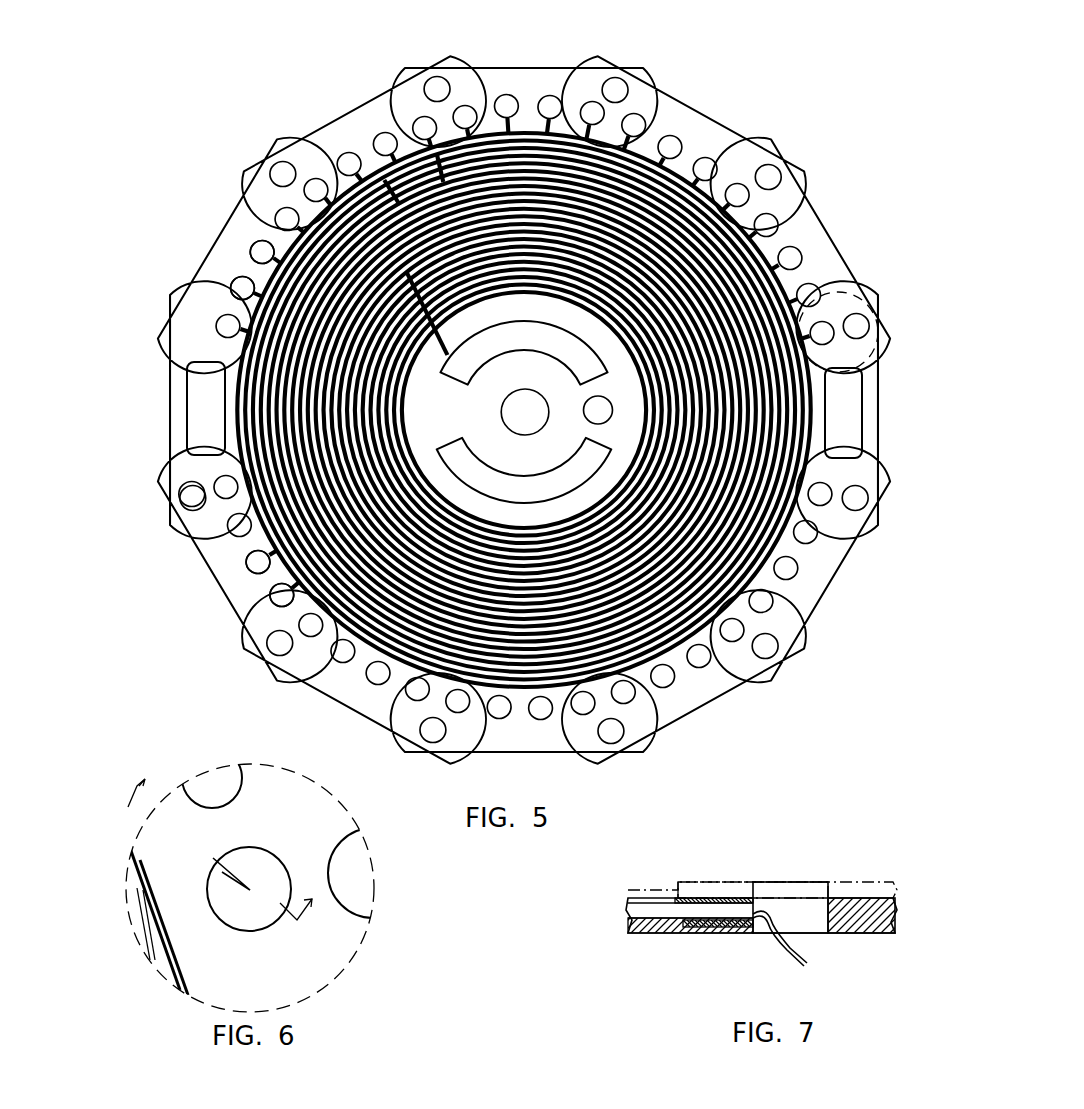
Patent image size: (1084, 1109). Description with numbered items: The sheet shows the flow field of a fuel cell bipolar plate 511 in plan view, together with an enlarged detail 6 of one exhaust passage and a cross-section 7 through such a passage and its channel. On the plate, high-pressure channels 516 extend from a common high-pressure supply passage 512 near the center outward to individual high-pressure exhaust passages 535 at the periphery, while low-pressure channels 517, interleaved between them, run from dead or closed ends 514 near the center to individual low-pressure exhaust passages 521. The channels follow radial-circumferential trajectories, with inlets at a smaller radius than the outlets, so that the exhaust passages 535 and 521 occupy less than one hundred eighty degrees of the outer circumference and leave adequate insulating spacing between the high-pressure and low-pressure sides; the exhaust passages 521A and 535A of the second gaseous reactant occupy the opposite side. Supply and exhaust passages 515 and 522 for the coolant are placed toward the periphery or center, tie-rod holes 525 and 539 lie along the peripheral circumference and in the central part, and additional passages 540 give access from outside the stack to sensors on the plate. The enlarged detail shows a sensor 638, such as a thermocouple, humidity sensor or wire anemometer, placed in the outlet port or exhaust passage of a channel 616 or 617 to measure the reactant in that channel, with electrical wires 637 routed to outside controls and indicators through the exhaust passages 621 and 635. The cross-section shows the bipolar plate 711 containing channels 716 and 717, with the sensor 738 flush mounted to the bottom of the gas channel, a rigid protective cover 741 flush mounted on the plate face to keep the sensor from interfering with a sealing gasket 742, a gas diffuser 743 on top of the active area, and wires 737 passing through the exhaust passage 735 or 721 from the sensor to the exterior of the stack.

In FIG. 5, the bipolar plate 511 is at (702, 113).
In FIG. 5, the common high-pressure supply passage 512 is at (541, 338).
In FIG. 5, the dead or closed ends 514 is at (398, 183).
In FIG. 5, the coolant supply passage 515 is at (843, 415).
In FIG. 5, the high-pressure channels 516 is at (420, 338).
In FIG. 5, the low-pressure channels 517 is at (440, 165).
In FIG. 5, the low-pressure exhaust passages 521 is at (258, 252).
In FIG. 5, the coolant exhaust passage 522 is at (203, 408).
In FIG. 5, the tie-rod holes 525 is at (184, 497).
In FIG. 5, the high-pressure exhaust passages 535 is at (242, 290).
In FIG. 5, the exhaust passages of the second gaseous reactant 535A is at (252, 566).
In FIG. 5, the exhaust passages of the second gaseous reactant 521A is at (278, 596).
In FIG. 5, the tie-rod hole 539 is at (525, 412).
In FIG. 5, the additional passages 540 is at (598, 410).
In FIG. 5, the detail area of FIG. 6 is at (850, 305).
In FIG. 6, the section line 7- 7 is at (226, 844).
In FIG. 6, the channel 616 is at (141, 839).
In FIG. 6, the channel 617 is at (146, 825).
In FIG. 6, the exhaust passage 621 is at (258, 872).
In FIG. 6, the exhaust passage 635 is at (277, 872).
In FIG. 6, the electrical wires 637 is at (246, 890).
In FIG. 6, the sensor 638 is at (153, 857).
In FIG. 7, the bipolar plate 711 is at (871, 920).
In FIG. 7, the channel 716 is at (670, 949).
In FIG. 7, the channel 717 is at (662, 912).
In FIG. 7, the exhaust passage 721 is at (812, 907).
In FIG. 7, the exhaust passage 735 is at (821, 886).
In FIG. 7, the wires 737 is at (805, 960).
In FIG. 7, the sensor 738 is at (718, 930).
In FIG. 7, the rigid protective cover 741 is at (731, 897).
In FIG. 7, the sealing gasket 742 is at (710, 890).
In FIG. 7, the gas diffuser 743 is at (648, 892).